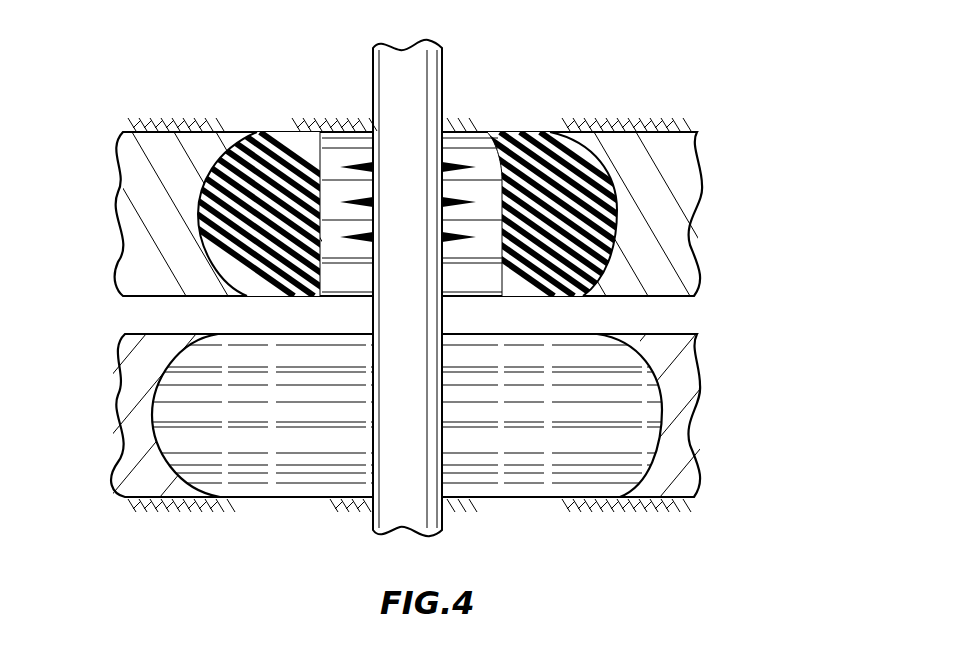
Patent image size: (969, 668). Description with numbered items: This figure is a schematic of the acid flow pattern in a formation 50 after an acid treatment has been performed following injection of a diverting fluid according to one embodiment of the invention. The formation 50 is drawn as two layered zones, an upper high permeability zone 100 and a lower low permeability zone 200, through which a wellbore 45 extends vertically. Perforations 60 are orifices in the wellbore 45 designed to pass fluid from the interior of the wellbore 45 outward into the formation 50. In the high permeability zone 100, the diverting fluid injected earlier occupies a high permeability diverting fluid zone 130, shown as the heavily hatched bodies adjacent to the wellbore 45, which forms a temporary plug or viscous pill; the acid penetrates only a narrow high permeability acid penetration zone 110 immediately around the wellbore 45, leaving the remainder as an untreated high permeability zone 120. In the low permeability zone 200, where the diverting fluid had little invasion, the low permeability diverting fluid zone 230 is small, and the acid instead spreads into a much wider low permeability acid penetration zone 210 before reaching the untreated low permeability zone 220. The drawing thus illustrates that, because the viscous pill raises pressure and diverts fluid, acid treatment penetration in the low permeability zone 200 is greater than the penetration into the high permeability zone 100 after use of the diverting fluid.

The wellbore 45 is at (365, 82).
The formation 50 is at (145, 118).
The perforations 60 is at (470, 236).
The high permeability zone 100 is at (457, 172).
The high permeability acid penetration zone 110 is at (462, 143).
The untreated high permeability zone 120 is at (625, 142).
The high permeability diverting fluid zone 130 is at (540, 140).
The low permeability zone 200 is at (418, 398).
The low permeability acid penetration zone 210 is at (512, 470).
The untreated low permeability zone 220 is at (667, 352).
The low permeability diverting fluid zone 230 is at (407, 433).